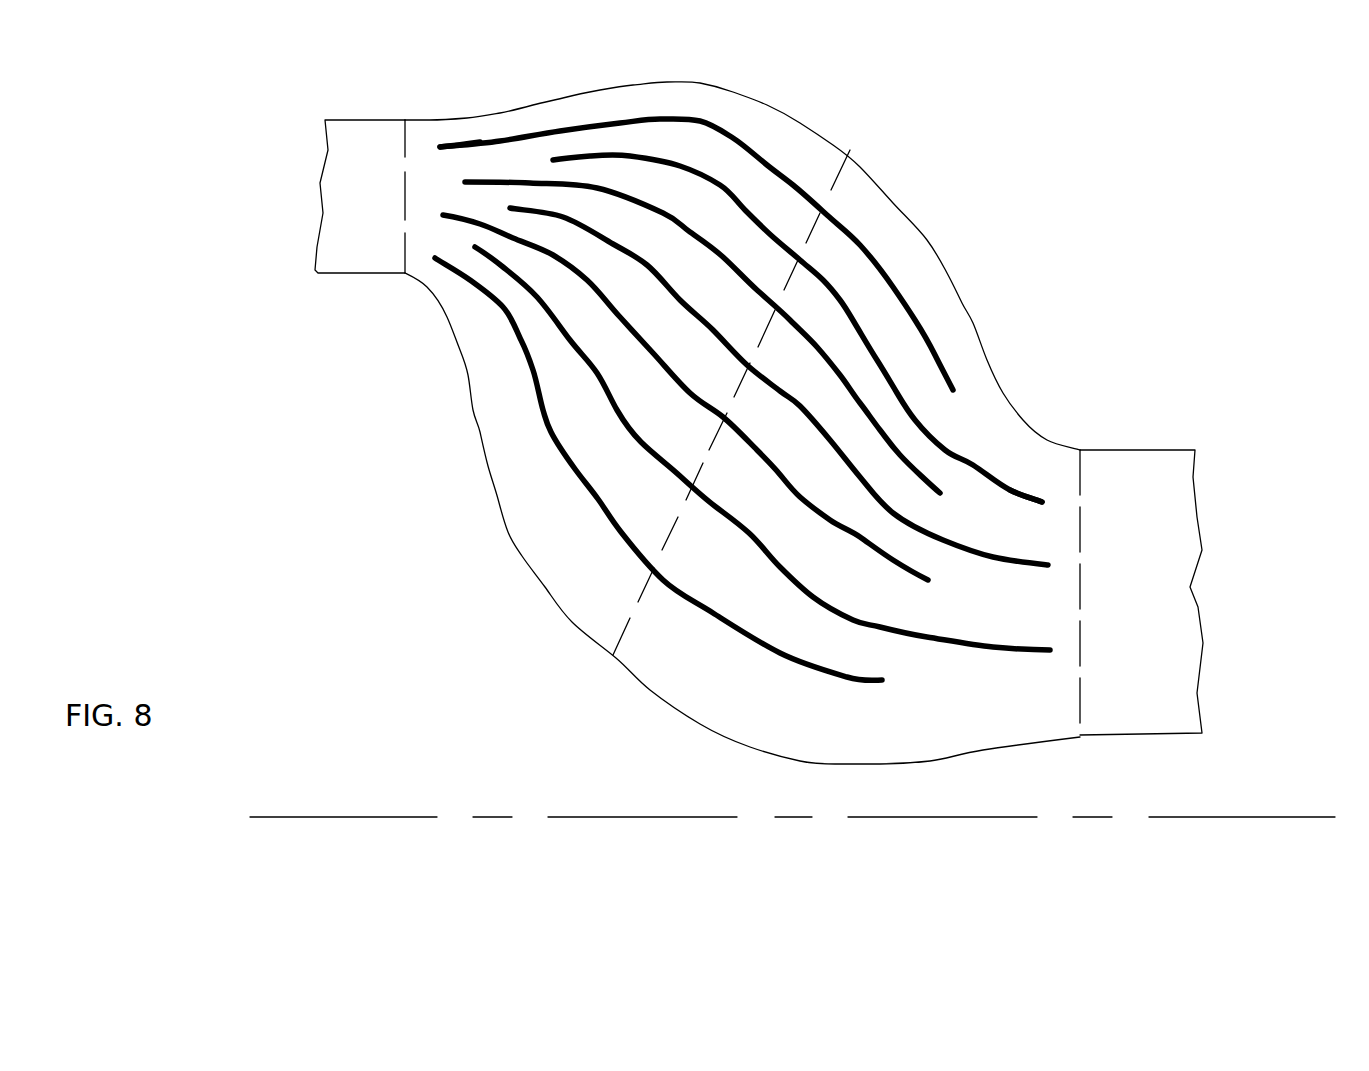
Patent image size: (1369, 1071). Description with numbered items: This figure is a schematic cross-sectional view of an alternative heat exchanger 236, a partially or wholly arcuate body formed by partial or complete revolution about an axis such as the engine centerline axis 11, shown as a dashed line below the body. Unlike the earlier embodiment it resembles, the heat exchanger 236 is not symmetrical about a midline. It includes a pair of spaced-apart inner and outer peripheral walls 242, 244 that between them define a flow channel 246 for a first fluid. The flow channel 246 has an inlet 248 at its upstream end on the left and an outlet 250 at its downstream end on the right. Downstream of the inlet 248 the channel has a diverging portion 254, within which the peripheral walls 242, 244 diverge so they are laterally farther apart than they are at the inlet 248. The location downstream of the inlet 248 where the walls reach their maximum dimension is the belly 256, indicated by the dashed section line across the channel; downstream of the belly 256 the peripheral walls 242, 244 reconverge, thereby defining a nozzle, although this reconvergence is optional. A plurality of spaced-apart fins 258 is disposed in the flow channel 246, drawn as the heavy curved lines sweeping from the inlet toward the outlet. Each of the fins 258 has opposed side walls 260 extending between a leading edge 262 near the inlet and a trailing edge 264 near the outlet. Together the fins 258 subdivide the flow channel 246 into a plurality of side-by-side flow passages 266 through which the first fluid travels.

The centerline axis 11 is at (353, 817).
The heat exchanger 236 is at (1034, 97).
The inner peripheral wall 242 is at (513, 542).
The outer peripheral wall 244 is at (932, 246).
The flow channel 246 is at (1006, 717).
The inlet 248 is at (403, 153).
The outlet 250 is at (1080, 487).
The diverging portion 254 is at (584, 88).
The belly 256 is at (846, 151).
The fins 258 is at (972, 462).
The side walls 260 is at (684, 128).
The leading edge 262 is at (441, 148).
The trailing edge 264 is at (1043, 503).
The flow passages 266 is at (750, 189).